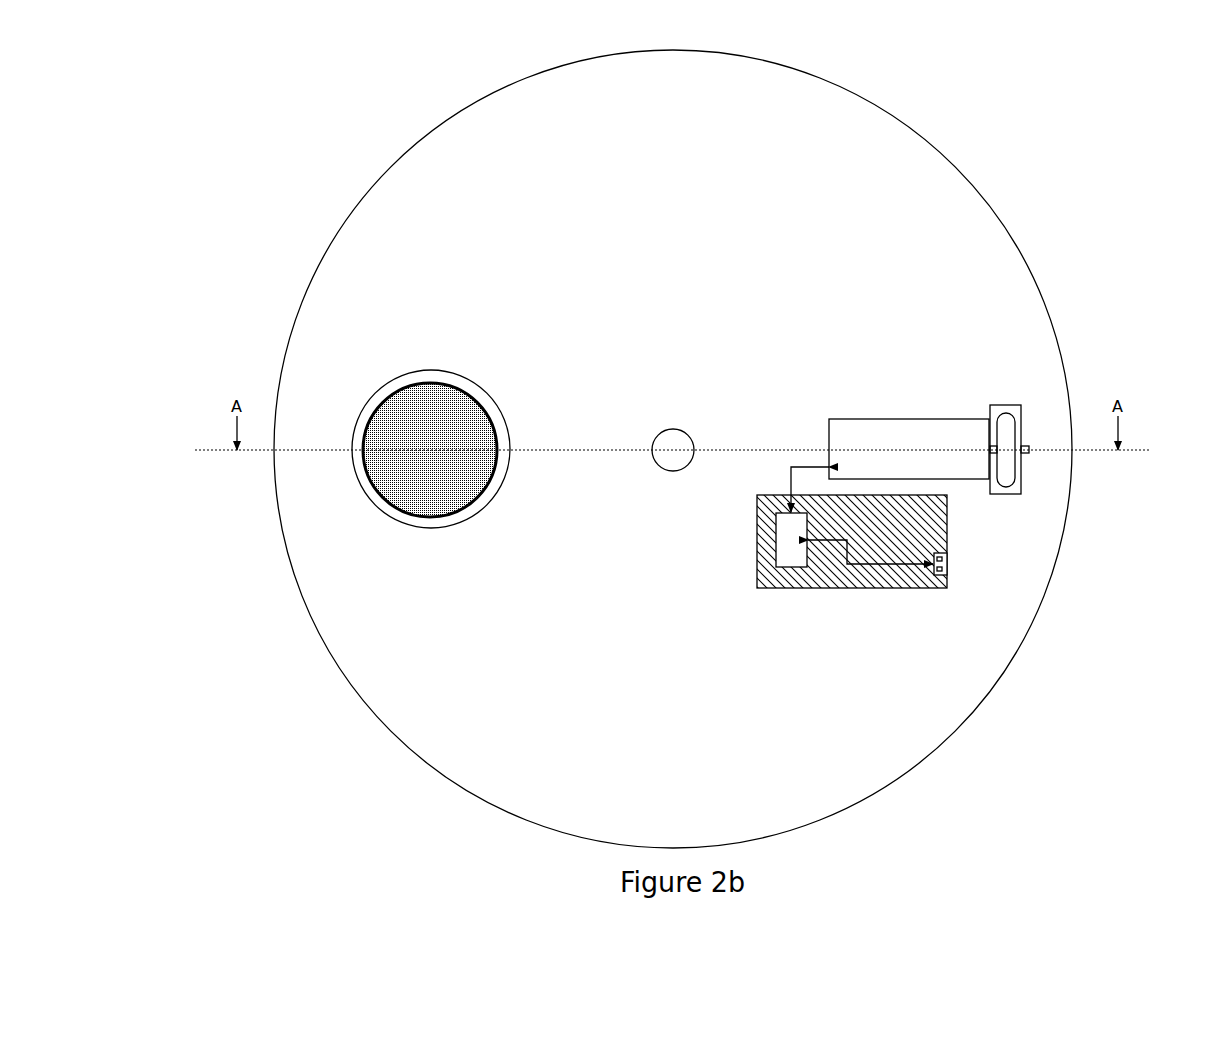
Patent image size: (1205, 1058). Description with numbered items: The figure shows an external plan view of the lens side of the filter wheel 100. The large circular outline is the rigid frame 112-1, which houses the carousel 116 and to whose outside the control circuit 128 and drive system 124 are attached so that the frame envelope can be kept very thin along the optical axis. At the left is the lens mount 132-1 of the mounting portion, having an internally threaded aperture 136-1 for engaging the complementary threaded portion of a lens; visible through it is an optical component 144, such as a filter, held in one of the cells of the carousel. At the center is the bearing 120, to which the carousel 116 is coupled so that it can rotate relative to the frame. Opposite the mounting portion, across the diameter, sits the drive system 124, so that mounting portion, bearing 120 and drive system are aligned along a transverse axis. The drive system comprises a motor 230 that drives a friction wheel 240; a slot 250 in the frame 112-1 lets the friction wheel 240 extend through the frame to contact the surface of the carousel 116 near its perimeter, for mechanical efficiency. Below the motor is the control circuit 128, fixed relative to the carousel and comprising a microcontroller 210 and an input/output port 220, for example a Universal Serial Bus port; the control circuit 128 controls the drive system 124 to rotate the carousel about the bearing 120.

The filter wheel 100 is at (629, 449).
The frame 112-1 is at (378, 216).
The lens mount 132-1 is at (418, 453).
The optical component 144 is at (428, 497).
The internally threaded aperture 136-1 is at (519, 412).
The bearing 120 is at (654, 462).
The drive system 124 is at (917, 454).
The motor 230 is at (905, 419).
The slot 250 is at (1005, 405).
The friction wheel 240 is at (1018, 482).
The carousel 116 is at (997, 490).
The microcontroller 210 is at (854, 540).
The input/output port 220 is at (947, 566).
The control circuit 128 is at (712, 612).